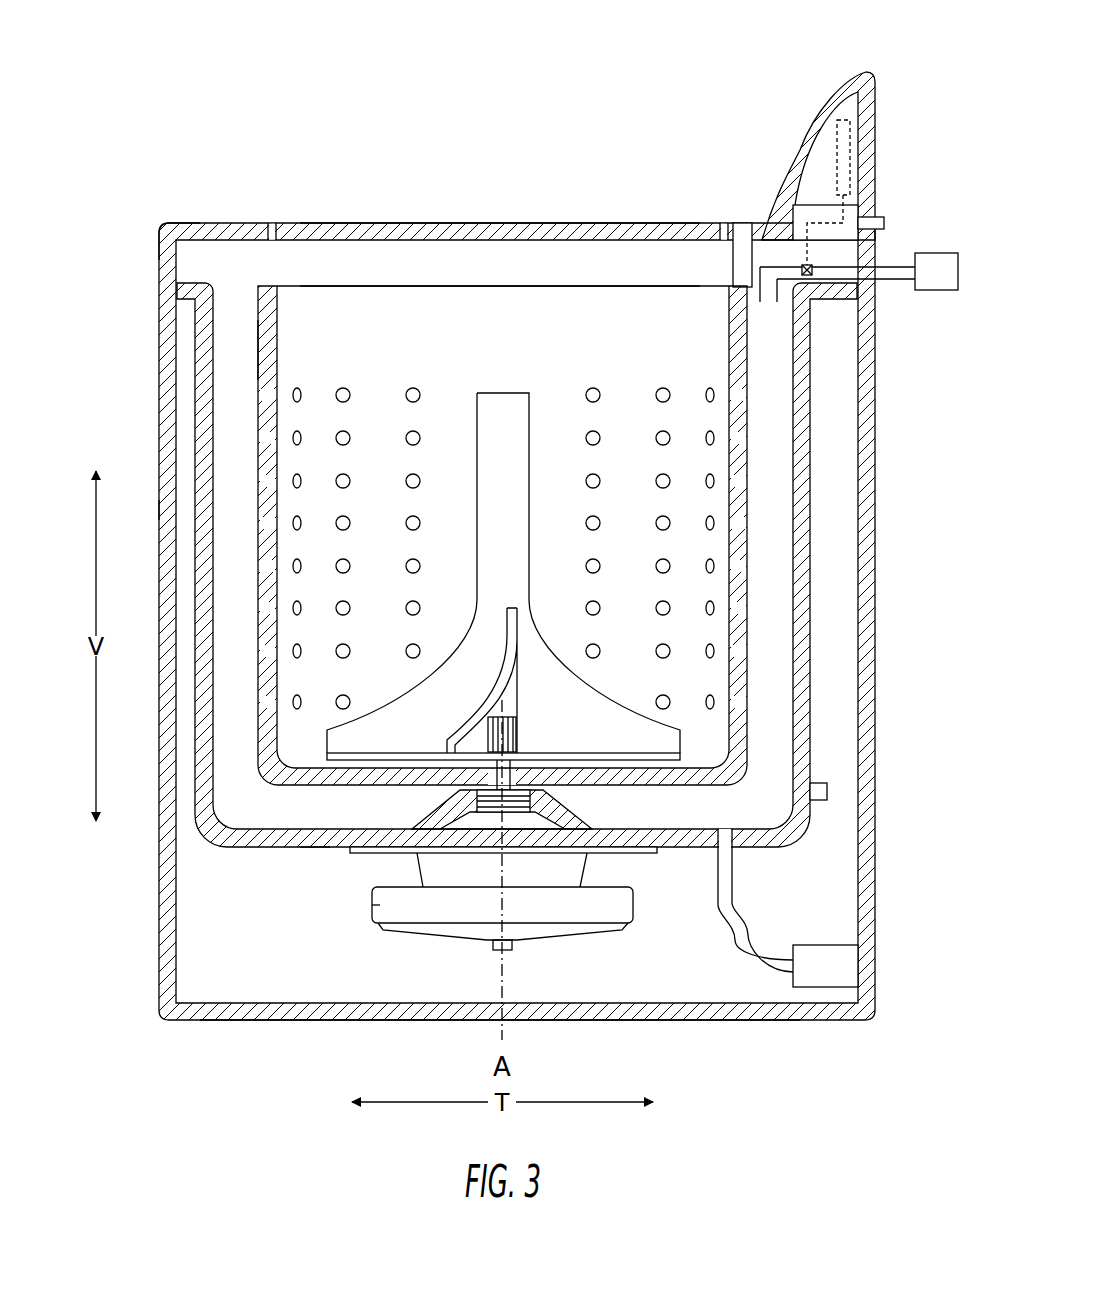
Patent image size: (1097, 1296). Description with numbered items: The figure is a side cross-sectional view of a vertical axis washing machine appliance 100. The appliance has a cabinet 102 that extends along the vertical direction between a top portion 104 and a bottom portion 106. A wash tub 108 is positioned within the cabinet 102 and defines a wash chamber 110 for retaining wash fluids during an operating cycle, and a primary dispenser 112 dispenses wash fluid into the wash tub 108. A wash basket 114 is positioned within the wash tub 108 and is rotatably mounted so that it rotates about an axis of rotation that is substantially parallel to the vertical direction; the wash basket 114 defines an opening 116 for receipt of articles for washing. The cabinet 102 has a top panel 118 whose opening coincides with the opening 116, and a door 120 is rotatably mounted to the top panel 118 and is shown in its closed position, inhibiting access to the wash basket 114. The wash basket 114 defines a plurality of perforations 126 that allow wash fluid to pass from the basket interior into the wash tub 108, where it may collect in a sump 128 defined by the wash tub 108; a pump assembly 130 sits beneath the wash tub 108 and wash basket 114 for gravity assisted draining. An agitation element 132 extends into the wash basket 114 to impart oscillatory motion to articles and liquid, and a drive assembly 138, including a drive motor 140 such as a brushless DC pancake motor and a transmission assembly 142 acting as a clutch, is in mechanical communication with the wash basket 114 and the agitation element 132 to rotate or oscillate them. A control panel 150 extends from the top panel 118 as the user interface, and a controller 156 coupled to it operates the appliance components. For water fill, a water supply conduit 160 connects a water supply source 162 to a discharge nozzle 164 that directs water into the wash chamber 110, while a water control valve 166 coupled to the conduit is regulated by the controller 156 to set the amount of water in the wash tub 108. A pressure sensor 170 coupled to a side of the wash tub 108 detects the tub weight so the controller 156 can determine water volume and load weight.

The washing machine appliance 100 is at (198, 103).
The cabinet 102 is at (168, 368).
The top portion 104 is at (152, 231).
The bottom portion 106 is at (152, 1019).
The wash tub 108 is at (797, 690).
The wash chamber 110 is at (233, 500).
The primary dispenser 112 is at (747, 262).
The wash basket 114 is at (268, 306).
The opening 116 is at (588, 282).
The top panel 118 is at (203, 222).
The door 120 is at (393, 222).
The perforations 126 is at (421, 391).
The sump 128 is at (325, 820).
The pump assembly 130 is at (768, 975).
The agitation element 132 is at (510, 396).
The drive assembly 138 is at (339, 894).
The drive motor 140 is at (623, 908).
The transmission assembly 142 is at (567, 853).
The control panel 150 is at (815, 121).
The controller 156 is at (853, 137).
The water supply conduit 160 is at (897, 280).
The water supply source 162 is at (936, 271).
The discharge nozzle 164 is at (767, 305).
The water control valve 166 is at (813, 271).
The pressure sensor 170 is at (827, 790).